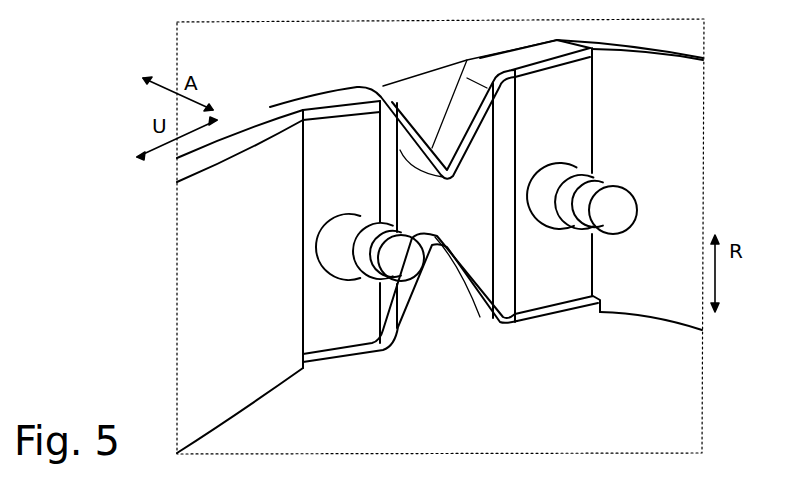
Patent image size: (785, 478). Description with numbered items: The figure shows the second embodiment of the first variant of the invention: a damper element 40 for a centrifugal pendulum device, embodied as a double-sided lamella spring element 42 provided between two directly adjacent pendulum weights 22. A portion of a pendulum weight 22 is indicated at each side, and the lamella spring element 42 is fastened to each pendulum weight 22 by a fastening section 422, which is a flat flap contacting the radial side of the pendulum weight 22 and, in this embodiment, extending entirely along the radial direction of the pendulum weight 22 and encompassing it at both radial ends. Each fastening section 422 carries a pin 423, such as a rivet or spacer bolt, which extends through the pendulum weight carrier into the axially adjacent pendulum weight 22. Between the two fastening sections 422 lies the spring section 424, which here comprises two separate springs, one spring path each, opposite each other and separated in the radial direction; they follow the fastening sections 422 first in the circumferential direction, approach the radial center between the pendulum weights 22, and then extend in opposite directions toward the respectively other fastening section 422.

The pendulum weight 22 is at (190, 240).
The damper element 40 is at (467, 297).
The lamella spring element 42 is at (435, 223).
The fastening section 422 is at (393, 362).
The pin 423 is at (337, 242).
The spring section 424 is at (425, 71).